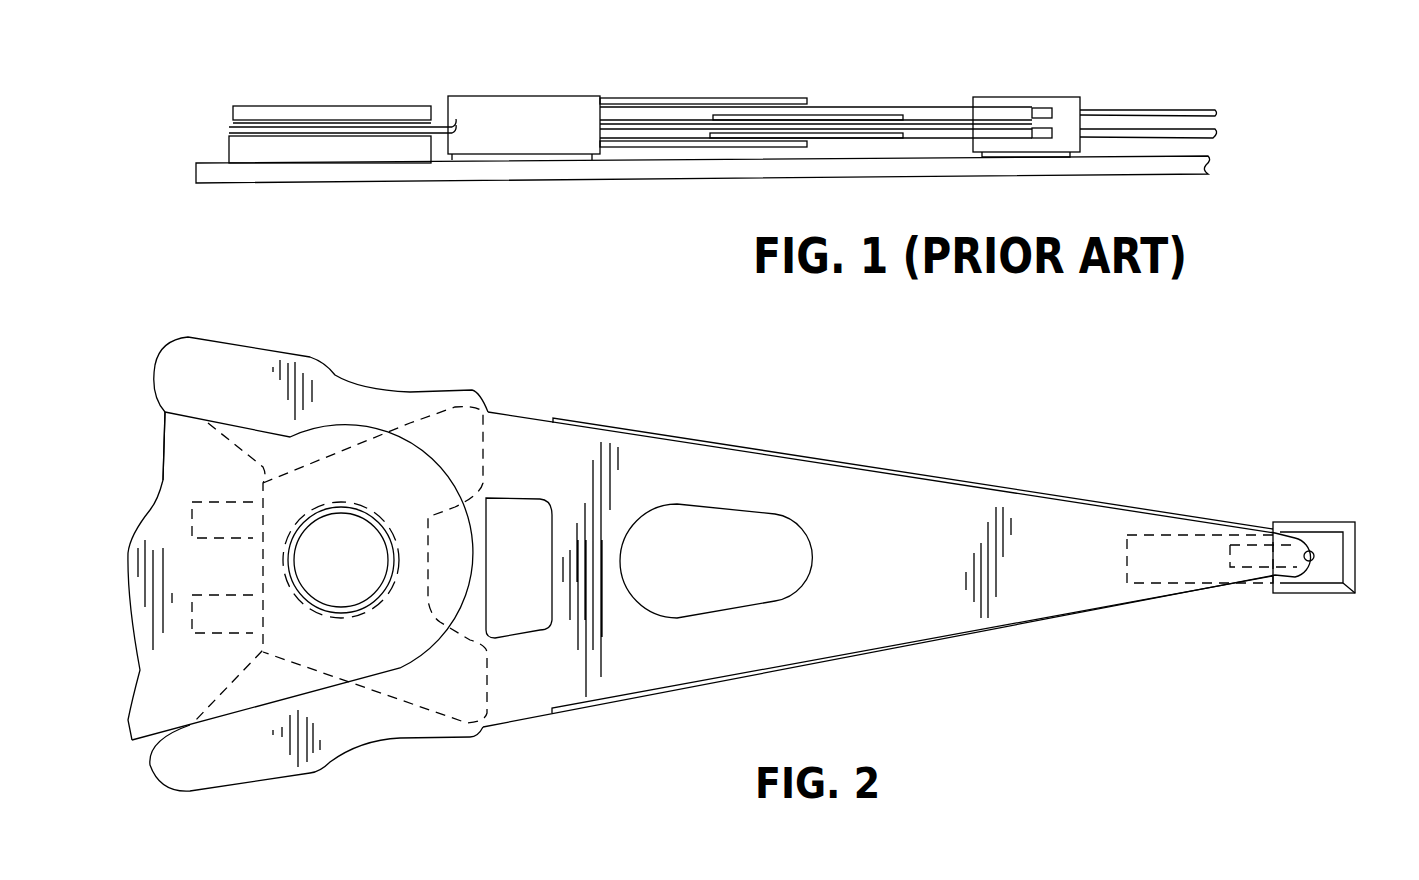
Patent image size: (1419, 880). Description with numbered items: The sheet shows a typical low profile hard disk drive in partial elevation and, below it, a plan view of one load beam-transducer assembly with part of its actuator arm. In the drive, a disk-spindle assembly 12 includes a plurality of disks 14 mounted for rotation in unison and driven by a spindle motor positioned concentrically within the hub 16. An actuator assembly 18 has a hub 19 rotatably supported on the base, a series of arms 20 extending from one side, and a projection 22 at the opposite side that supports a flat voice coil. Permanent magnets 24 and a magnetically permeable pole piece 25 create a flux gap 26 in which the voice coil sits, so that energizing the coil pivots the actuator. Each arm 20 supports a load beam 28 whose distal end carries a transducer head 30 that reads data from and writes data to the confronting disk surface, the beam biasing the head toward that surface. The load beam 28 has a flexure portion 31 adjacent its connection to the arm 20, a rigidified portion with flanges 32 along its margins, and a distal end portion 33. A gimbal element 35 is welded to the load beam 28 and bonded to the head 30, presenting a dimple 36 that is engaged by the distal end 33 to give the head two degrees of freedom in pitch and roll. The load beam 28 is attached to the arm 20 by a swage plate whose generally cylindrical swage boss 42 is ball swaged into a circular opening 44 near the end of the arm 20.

In FIG. 1, the disk-spindle assembly 12 is at (1119, 92).
In FIG. 1, the disks 14 is at (1190, 107).
In FIG. 1, the hub 16 is at (1023, 97).
In FIG. 1, the actuator assembly 18 is at (816, 78).
In FIG. 1, the hub 19 is at (530, 92).
In FIG. 1, the arms 20 is at (673, 98).
In FIG. 2, the arms 20 is at (133, 742).
In FIG. 1, the projection 22 is at (228, 128).
In FIG. 1, the permanent magnets 24 is at (307, 150).
In FIG. 1, the pole piece 25 is at (358, 105).
In FIG. 1, the flux gap 26 is at (228, 134).
In FIG. 1, the load beam 28 is at (888, 105).
In FIG. 2, the load beam 28 is at (748, 438).
In FIG. 1, the transducer head 30 is at (1053, 107).
In FIG. 2, the transducer head 30 is at (1340, 597).
In FIG. 2, the flexure portion 31 is at (513, 703).
In FIG. 2, the flanges 32 is at (880, 470).
In FIG. 2, the distal end portion 33 is at (1318, 590).
In FIG. 2, the gimbal element 35 is at (1328, 527).
In FIG. 2, the dimple 36 is at (1302, 547).
In FIG. 2, the swage boss 42 is at (375, 528).
In FIG. 2, the circular opening 44 is at (357, 623).